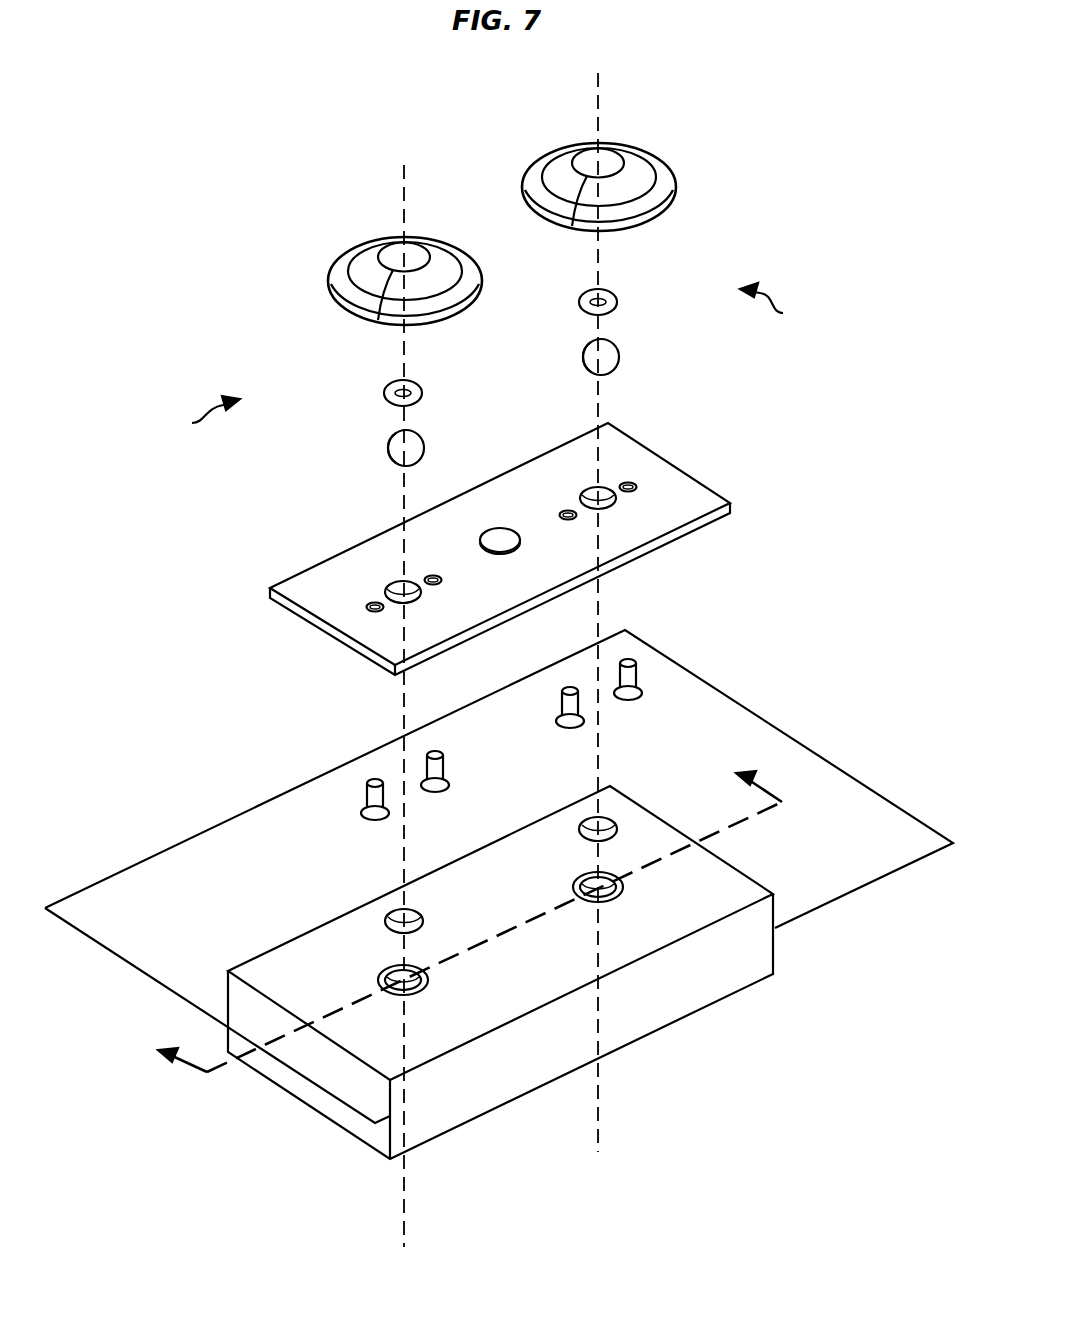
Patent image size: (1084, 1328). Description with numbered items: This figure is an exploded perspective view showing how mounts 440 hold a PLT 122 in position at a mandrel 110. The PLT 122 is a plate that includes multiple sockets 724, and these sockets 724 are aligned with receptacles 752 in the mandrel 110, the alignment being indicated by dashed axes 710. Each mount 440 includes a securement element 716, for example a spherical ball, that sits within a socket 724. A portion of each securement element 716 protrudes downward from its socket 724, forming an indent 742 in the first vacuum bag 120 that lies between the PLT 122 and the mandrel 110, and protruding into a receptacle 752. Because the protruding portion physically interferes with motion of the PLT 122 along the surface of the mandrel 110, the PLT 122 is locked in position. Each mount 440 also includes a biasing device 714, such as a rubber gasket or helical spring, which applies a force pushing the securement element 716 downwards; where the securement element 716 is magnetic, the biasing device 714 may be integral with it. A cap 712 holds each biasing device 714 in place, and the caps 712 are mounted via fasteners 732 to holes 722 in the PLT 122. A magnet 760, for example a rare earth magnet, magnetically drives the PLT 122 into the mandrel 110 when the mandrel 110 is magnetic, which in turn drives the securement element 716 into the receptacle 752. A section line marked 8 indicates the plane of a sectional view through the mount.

The mandrel 110 is at (343, 1108).
The first vacuum bag 120 is at (743, 725).
The PLT 122 is at (298, 574).
The mount 440 is at (491, 359).
The axis 710 is at (598, 89).
The cap 712 is at (662, 175).
The biasing device 714 is at (617, 300).
The securement element 716 is at (608, 358).
The hole 722 is at (630, 482).
The socket 724 is at (587, 488).
The fastener 732 is at (440, 767).
The indent 742 is at (411, 913).
The receptacle 752 is at (420, 978).
The magnet 760 is at (495, 541).
The section line 8- 8 is at (479, 938).